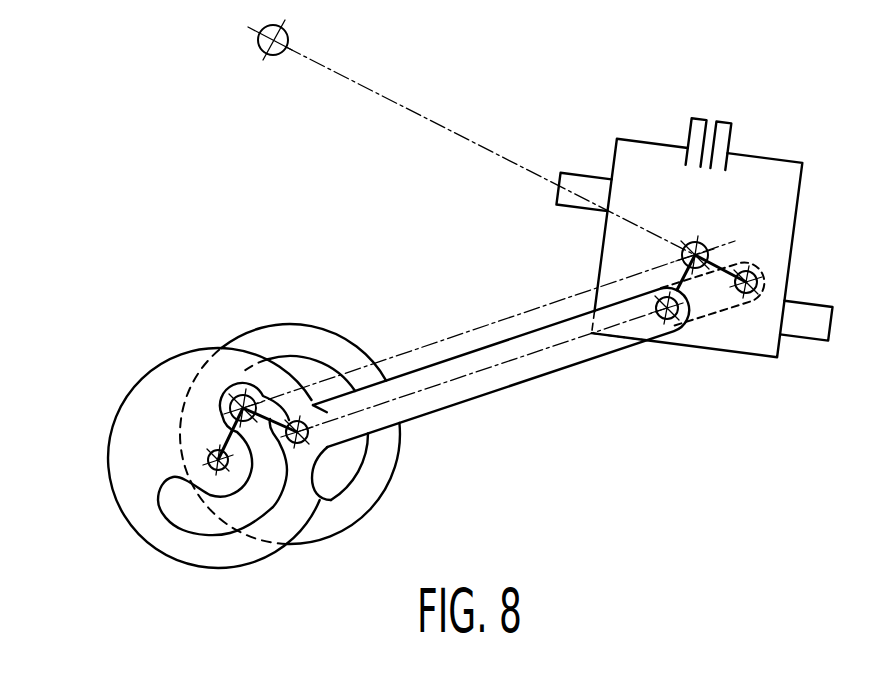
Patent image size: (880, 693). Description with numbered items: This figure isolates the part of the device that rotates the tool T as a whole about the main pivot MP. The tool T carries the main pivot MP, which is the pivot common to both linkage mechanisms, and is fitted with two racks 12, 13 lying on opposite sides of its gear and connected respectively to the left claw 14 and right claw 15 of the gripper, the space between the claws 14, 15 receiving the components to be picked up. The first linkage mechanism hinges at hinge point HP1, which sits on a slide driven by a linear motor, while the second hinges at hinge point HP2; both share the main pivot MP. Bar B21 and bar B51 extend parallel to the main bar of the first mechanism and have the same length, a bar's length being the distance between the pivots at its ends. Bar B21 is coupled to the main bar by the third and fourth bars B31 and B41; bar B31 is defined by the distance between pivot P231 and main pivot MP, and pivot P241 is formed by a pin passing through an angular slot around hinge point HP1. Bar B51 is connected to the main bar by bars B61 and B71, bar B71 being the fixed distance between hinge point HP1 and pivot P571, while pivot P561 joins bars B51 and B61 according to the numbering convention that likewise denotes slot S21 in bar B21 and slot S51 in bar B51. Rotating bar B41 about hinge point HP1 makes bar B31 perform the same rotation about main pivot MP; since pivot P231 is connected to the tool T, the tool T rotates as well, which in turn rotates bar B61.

The tool T is at (650, 172).
The rack 12 is at (810, 320).
The rack 13 is at (582, 188).
The left claw 14 is at (692, 127).
The right claw 15 is at (731, 126).
The hinge point HP1 is at (236, 390).
The hinge point HP2 is at (277, 56).
The main pivot MP is at (697, 241).
The pivot point P231 is at (663, 320).
The pivot point P241 is at (207, 453).
The pivot point P561 is at (754, 278).
The pivot point P571 is at (305, 418).
The bar B21 is at (523, 372).
The third bar B31 is at (673, 277).
The fourth bar B41 is at (234, 500).
The fifth bar B51 is at (722, 301).
The bar B61 is at (732, 266).
The bar B71 is at (312, 488).
The slot S21 is at (193, 508).
The slot S51 is at (320, 374).